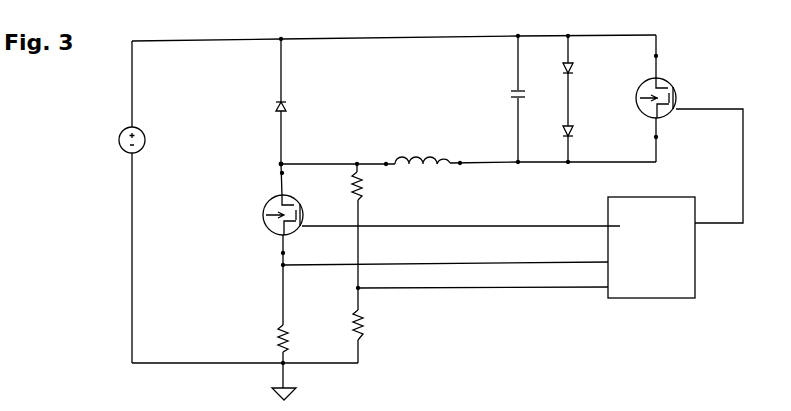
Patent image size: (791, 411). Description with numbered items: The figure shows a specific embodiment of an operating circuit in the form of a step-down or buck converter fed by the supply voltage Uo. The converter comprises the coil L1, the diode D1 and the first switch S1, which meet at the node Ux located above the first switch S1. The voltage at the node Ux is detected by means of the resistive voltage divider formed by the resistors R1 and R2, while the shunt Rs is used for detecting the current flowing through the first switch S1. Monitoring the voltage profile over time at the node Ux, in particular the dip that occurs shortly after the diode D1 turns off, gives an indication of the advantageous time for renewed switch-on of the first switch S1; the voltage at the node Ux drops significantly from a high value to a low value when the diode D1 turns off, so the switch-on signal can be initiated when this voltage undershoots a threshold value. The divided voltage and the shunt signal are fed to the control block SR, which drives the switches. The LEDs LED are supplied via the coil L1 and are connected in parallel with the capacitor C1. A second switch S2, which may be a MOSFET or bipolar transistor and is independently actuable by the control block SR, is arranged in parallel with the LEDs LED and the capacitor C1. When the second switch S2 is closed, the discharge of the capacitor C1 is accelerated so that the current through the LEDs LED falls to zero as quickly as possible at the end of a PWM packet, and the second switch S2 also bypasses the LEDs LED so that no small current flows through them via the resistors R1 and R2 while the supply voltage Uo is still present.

The supply voltage Uo is at (120, 140).
The diode D1 is at (293, 106).
The node Ux is at (270, 164).
The first switch S1 is at (273, 212).
The second switch S2 is at (664, 95).
The resistor R1 is at (347, 186).
The resistor R2 is at (347, 325).
The shunt Rs is at (273, 338).
The coil L1 is at (422, 153).
The capacitor C1 is at (525, 94).
The LEDs LED is at (582, 100).
The control circuit SR is at (651, 247).